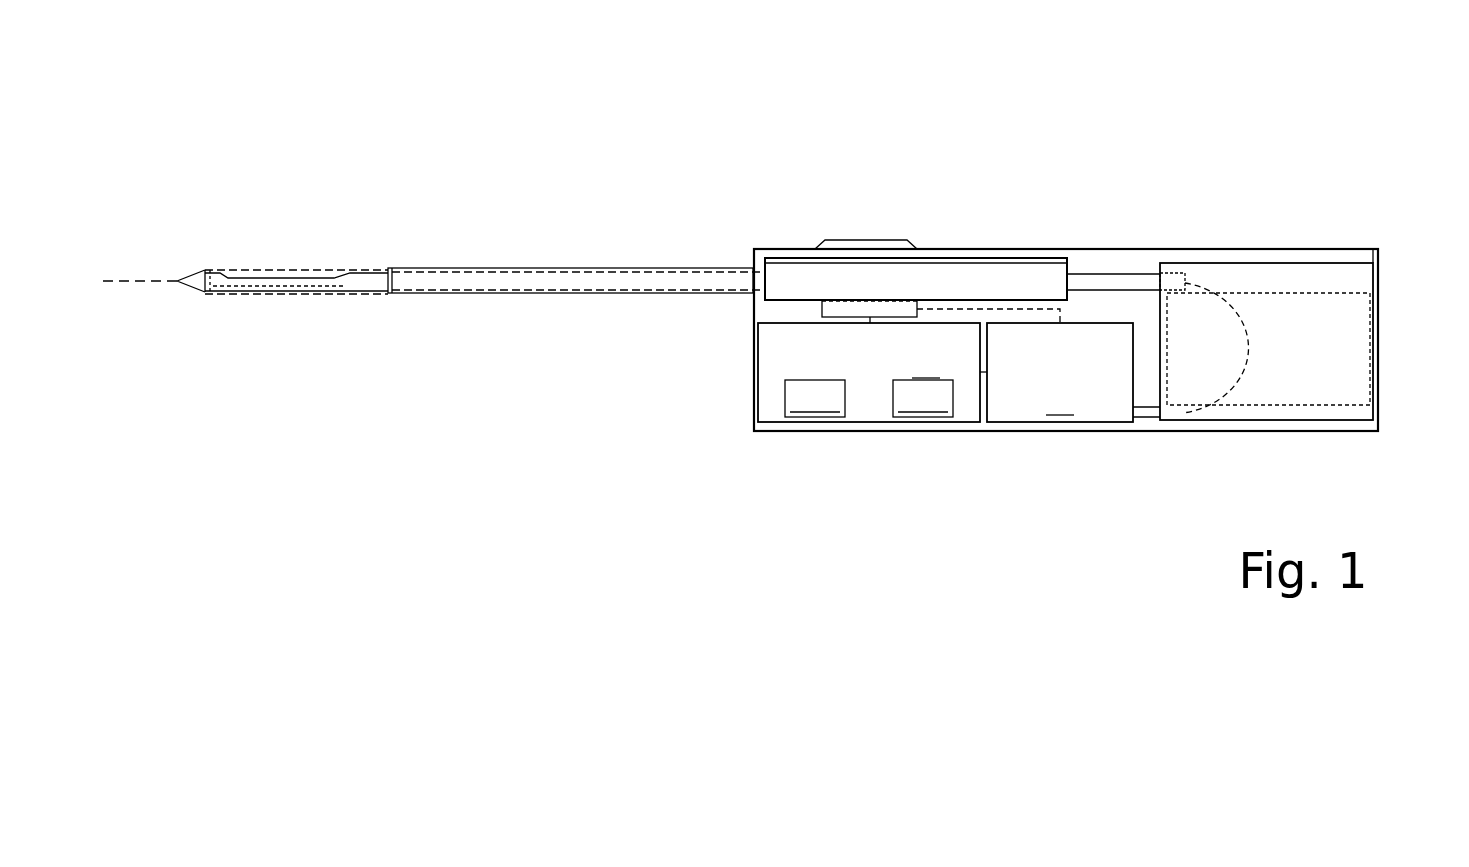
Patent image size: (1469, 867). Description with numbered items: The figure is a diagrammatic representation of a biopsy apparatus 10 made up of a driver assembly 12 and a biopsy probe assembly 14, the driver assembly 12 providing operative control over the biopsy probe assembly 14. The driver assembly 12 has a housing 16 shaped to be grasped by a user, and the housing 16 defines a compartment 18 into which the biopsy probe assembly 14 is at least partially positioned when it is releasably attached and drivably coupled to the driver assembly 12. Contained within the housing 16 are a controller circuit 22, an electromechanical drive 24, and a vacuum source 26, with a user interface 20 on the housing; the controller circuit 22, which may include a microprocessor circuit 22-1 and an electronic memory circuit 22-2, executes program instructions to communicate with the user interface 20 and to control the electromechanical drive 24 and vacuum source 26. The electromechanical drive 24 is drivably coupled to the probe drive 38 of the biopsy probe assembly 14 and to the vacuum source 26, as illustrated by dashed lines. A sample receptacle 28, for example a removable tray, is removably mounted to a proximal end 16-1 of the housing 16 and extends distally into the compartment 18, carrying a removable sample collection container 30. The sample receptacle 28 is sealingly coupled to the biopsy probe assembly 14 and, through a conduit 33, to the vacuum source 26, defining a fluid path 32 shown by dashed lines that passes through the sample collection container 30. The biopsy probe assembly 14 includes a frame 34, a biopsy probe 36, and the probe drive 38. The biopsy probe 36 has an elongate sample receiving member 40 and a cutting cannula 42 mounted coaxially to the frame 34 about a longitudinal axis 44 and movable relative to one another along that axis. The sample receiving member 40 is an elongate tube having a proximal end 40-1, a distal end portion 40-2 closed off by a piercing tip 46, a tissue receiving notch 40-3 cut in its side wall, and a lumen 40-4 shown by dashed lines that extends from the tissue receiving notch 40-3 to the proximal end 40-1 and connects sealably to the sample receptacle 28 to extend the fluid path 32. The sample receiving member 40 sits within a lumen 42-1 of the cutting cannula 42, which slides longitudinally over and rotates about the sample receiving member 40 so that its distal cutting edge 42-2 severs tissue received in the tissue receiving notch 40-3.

The biopsy apparatus 10 is at (503, 151).
The driver assembly 12 is at (1225, 178).
The biopsy probe assembly 14 is at (1073, 245).
The housing 16 is at (756, 385).
The proximal end 16-1 is at (1368, 241).
The compartment 18 is at (1340, 258).
The user interface 20 is at (848, 240).
The controller circuit 22 is at (872, 372).
The microprocessor circuit 22-1 is at (815, 398).
The electronic memory circuit 22-2 is at (923, 398).
The electromechanical drive 24 is at (822, 310).
The vacuum source 26 is at (1060, 372).
The sample receptacle 28 is at (1380, 298).
The sample collection container 30 is at (1250, 293).
The fluid path 32 is at (1255, 352).
The conduit 33 is at (1140, 420).
The frame 34 is at (960, 248).
The biopsy probe 36 is at (228, 182).
The probe drive 38 is at (901, 290).
The sample receiving member 40 is at (212, 270).
The proximal end 40-1 is at (1188, 280).
The distal end portion 40-2 is at (203, 312).
The tissue receiving notch 40-3 is at (291, 267).
The lumen 40-4 is at (352, 284).
The cutting cannula 42 is at (480, 268).
The lumen 42-1 is at (425, 277).
The distal cutting edge 42-2 is at (387, 298).
The longitudinal axis 44 is at (133, 272).
The piercing tip 46 is at (182, 270).